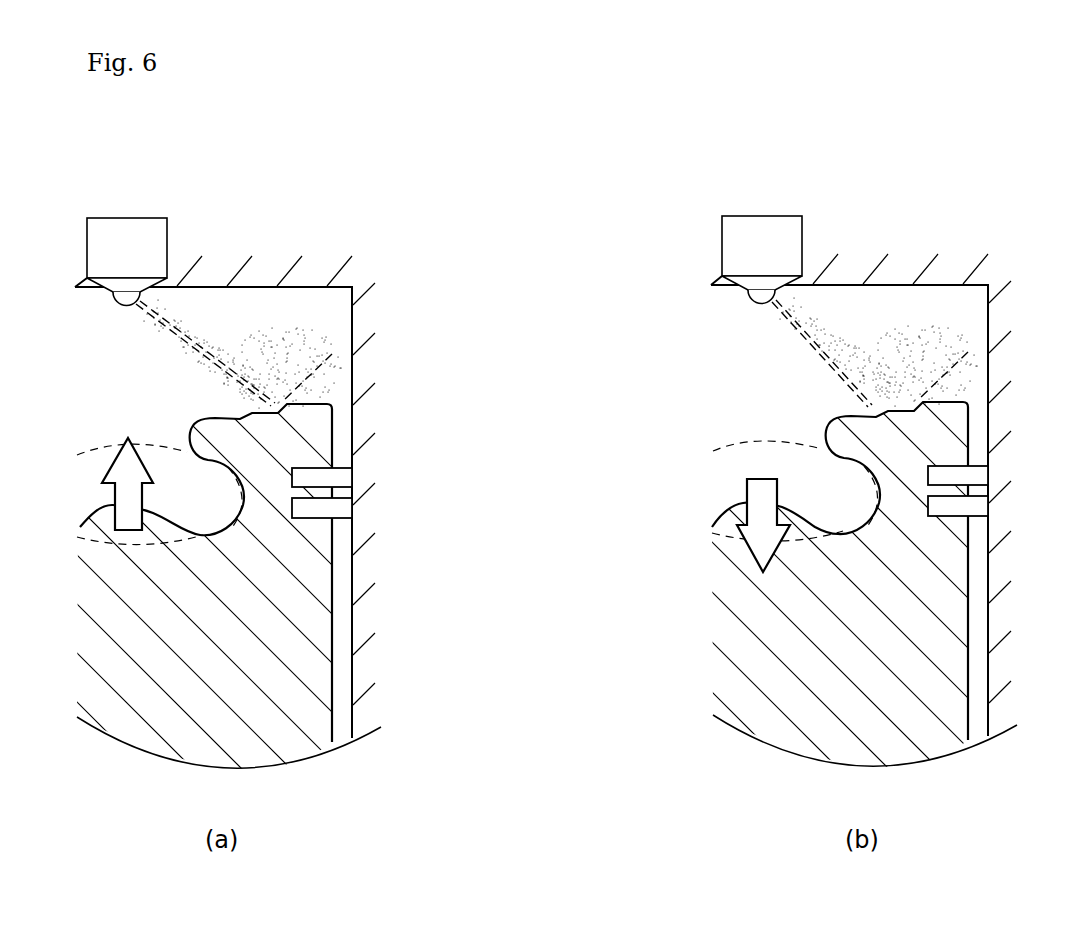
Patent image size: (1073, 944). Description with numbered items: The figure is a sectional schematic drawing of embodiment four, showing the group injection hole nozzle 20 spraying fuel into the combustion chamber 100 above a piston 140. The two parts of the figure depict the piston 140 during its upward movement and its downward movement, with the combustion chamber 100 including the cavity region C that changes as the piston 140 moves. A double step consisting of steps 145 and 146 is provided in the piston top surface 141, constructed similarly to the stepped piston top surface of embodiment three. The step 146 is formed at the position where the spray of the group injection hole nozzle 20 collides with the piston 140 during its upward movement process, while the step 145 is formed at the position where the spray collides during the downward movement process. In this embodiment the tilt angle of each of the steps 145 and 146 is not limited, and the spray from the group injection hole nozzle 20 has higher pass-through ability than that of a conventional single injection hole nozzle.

The group injection hole nozzle 20 is at (167, 243).
The combustion chamber 100 is at (114, 401).
The piston 140 is at (220, 647).
The piston top surface 141 is at (342, 393).
The step 145 is at (243, 404).
The step 146 is at (288, 397).